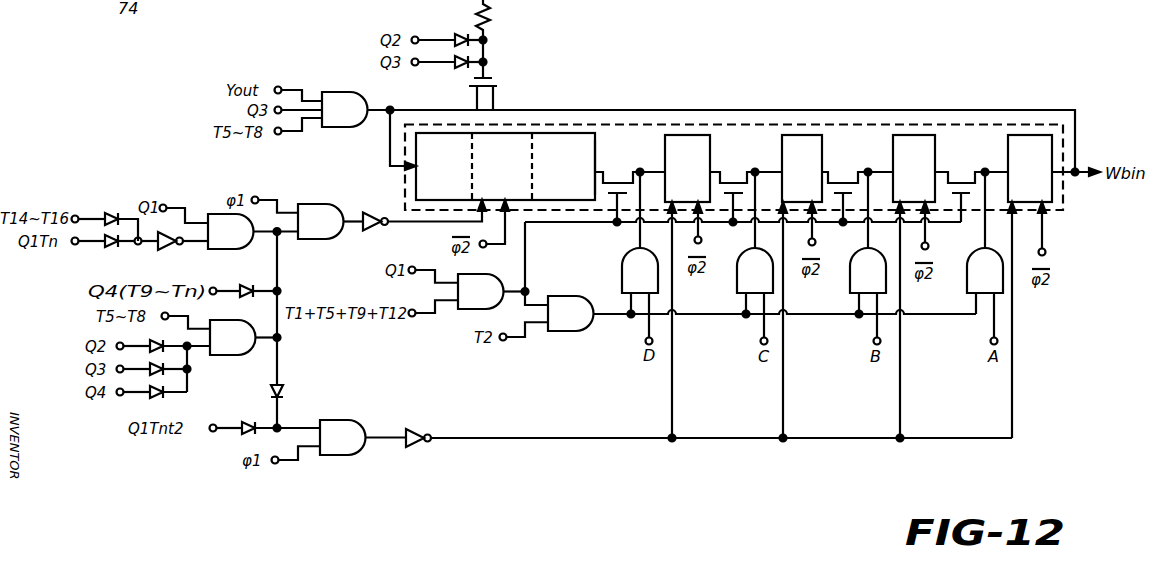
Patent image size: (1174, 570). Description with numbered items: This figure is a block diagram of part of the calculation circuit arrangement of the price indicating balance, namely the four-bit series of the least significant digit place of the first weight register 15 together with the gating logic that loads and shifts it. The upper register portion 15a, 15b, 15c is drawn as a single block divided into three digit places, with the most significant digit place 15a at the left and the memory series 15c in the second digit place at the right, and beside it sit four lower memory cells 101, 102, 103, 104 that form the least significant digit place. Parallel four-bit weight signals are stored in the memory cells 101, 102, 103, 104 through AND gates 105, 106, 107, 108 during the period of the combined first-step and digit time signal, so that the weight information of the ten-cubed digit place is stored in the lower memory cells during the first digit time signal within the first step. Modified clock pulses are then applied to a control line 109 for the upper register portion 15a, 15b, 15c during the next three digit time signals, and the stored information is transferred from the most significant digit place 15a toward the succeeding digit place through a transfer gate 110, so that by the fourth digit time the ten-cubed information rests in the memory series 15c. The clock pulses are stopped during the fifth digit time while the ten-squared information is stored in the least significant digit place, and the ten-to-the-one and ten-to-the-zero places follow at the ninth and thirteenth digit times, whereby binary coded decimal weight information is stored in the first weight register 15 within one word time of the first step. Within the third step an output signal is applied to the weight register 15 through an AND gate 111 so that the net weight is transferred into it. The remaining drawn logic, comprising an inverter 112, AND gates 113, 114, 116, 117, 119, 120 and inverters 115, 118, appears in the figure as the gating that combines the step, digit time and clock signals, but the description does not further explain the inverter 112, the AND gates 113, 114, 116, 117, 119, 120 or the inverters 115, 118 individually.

The first weight register 15 is at (630, 127).
The most significant digit place of upper register portion 15a is at (450, 166).
The upper register portion digit place 15b is at (510, 166).
The memory series in second digit place 15c is at (571, 167).
The memory cell 101 is at (692, 142).
The memory cell 102 is at (798, 142).
The memory cell 103 is at (912, 142).
The memory cell 104 is at (1030, 142).
The AND gate 105 is at (628, 282).
The AND gate 106 is at (740, 284).
The AND gate 107 is at (852, 286).
The AND gate 108 is at (970, 286).
The control line 109 is at (428, 228).
The transfer gate 110 is at (494, 84).
The AND gate 111 is at (343, 81).
The inverter 112 is at (163, 250).
The AND gate 113 is at (210, 214).
The AND gate 114 is at (323, 206).
The inverter 115 is at (374, 211).
The AND gate 116 is at (216, 357).
The AND gate 117 is at (332, 456).
The inverter 118 is at (419, 428).
The AND gate 119 is at (474, 280).
The AND gate 120 is at (578, 335).